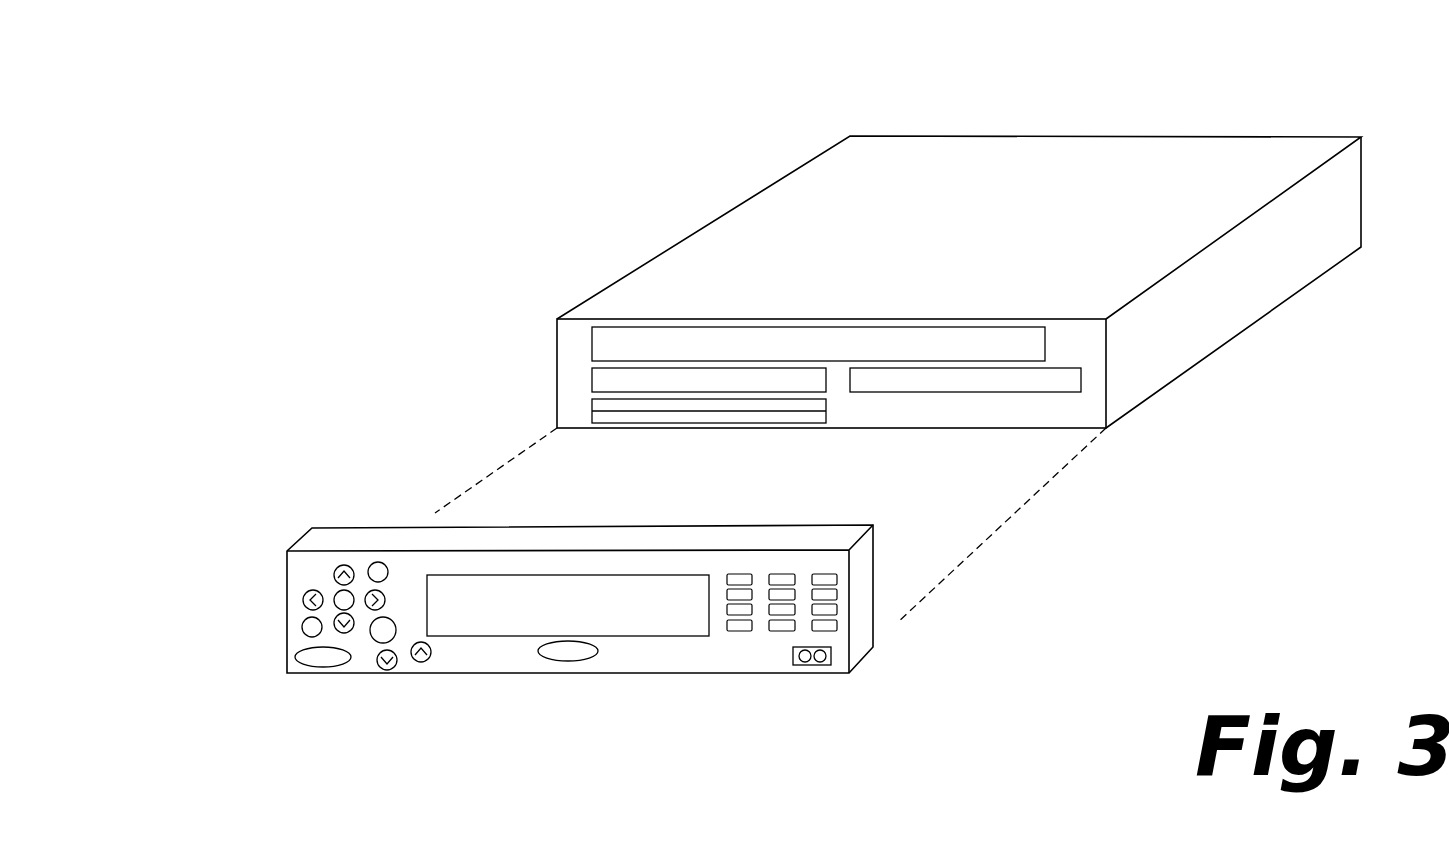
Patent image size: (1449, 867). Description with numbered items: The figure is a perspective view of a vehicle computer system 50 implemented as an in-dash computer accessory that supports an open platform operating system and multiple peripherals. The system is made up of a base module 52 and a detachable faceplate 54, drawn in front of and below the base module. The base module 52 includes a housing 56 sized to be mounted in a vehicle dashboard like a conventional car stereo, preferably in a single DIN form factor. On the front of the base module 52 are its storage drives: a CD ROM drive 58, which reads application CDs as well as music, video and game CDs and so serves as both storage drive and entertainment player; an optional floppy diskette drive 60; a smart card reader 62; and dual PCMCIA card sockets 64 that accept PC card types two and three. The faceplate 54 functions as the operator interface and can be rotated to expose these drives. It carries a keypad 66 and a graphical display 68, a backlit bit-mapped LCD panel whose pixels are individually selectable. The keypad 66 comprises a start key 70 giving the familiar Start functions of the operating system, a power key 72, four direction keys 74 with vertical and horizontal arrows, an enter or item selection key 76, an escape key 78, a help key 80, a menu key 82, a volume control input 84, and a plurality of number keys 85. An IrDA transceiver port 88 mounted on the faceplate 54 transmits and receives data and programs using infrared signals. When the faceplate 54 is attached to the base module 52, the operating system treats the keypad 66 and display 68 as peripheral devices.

The vehicle computer system 50 is at (453, 187).
The base module 52 is at (1203, 430).
The detachable faceplate 54 is at (873, 703).
The housing 56 is at (1250, 333).
The CD ROM drive 58 is at (751, 344).
The floppy diskette drive 60 is at (652, 379).
The smart card reader 62 is at (995, 380).
The PCMCIA card sockets 64 is at (722, 423).
The keypad 66 is at (295, 598).
The graphical display 68 is at (673, 575).
The start key 70 is at (567, 662).
The power key 72 is at (325, 667).
The direction keys 74 is at (334, 575).
The item selection key 76 is at (336, 604).
The escape key 78 is at (377, 562).
The help key 80 is at (320, 630).
The menu key 82 is at (379, 642).
The volume control input 84 is at (392, 670).
The number keys 85 is at (840, 613).
The IrDA transceiver port 88 is at (817, 665).